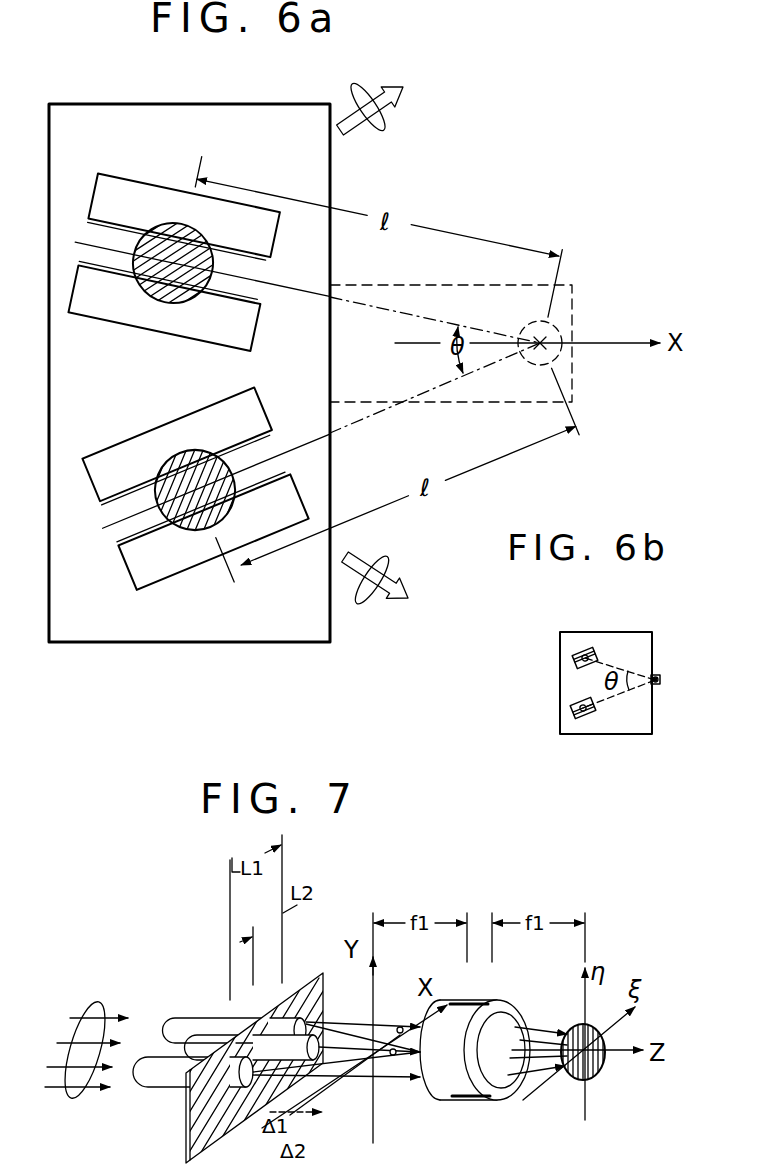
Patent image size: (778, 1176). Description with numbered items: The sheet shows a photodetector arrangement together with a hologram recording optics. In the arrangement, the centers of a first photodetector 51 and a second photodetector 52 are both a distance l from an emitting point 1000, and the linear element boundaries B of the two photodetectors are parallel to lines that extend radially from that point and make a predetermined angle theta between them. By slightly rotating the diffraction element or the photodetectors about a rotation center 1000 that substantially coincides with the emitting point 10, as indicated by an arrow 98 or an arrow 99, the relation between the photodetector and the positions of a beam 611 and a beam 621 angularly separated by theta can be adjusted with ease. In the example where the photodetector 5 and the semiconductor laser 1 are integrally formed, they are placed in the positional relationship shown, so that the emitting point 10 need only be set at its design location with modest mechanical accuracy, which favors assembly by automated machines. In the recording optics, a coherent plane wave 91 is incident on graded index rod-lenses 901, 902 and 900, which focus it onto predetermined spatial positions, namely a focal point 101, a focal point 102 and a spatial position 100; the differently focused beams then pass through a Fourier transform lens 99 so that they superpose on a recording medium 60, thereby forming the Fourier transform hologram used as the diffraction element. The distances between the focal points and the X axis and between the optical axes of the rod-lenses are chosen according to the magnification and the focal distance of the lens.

In FIG. 6B, the semiconductor laser 1 is at (660, 675).
In FIG. 6B, the photodetector 5 is at (617, 632).
In FIG. 6B, the emitting point 10 is at (662, 680).
In FIG. 6A, the first photodetector 51 is at (72, 242).
In FIG. 6B, the first photodetector 51 is at (574, 663).
In FIG. 6A, the second photodetector 52 is at (115, 532).
In FIG. 6B, the second photodetector 52 is at (576, 717).
In FIG. 7, the recording medium 60 is at (600, 1072).
In FIG. 7, the coherent plane wave 91 is at (73, 1097).
In FIG. 6A, the arrow 98 is at (372, 606).
In FIG. 6A, the Fourier transform lens 99 is at (366, 80).
In FIG. 7, the Fourier transform lens 99 is at (473, 1100).
In FIG. 7, the spatial position 100 is at (400, 1027).
In FIG. 7, the focal point 101 is at (328, 1078).
In FIG. 7, the focal point 102 is at (393, 1056).
In FIG. 6A, the beam 611 is at (143, 300).
In FIG. 6B, the beam 611 is at (583, 652).
In FIG. 6A, the second pole piece 621 is at (168, 460).
In FIG. 6B, the second pole piece 621 is at (590, 714).
In FIG. 7, the graded index rod-lens 900 is at (177, 1022).
In FIG. 7, the graded index rod-lens 901 is at (153, 1072).
In FIG. 7, the graded index rod-lens 902 is at (205, 1040).
In FIG. 6A, the rotation center 1000 is at (562, 336).
In FIG. 6A, the element boundary B is at (268, 260).